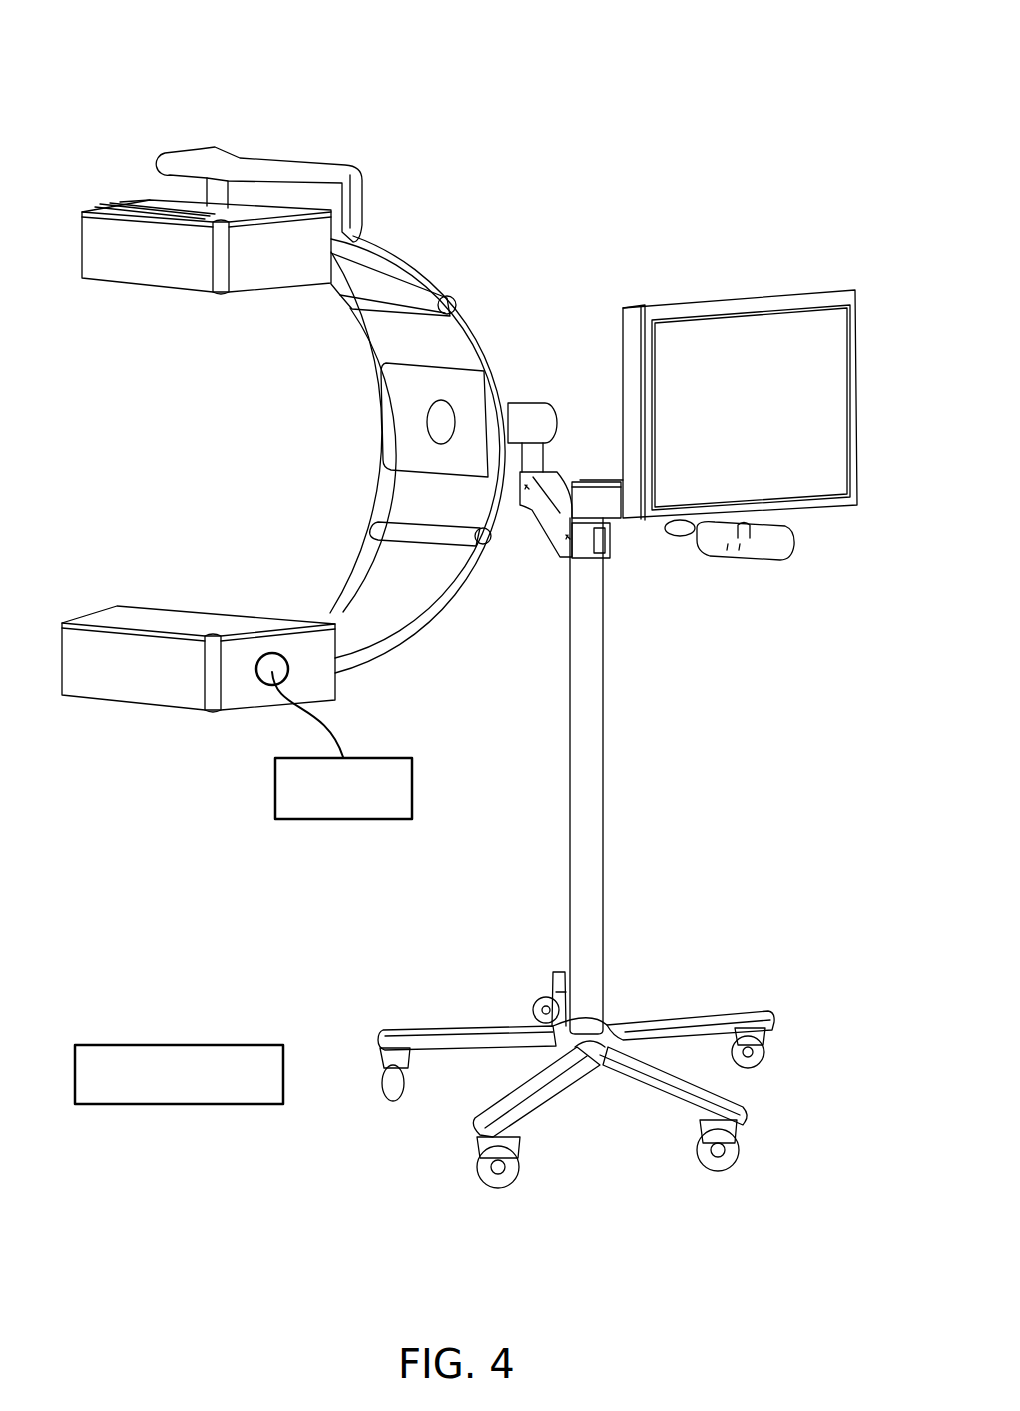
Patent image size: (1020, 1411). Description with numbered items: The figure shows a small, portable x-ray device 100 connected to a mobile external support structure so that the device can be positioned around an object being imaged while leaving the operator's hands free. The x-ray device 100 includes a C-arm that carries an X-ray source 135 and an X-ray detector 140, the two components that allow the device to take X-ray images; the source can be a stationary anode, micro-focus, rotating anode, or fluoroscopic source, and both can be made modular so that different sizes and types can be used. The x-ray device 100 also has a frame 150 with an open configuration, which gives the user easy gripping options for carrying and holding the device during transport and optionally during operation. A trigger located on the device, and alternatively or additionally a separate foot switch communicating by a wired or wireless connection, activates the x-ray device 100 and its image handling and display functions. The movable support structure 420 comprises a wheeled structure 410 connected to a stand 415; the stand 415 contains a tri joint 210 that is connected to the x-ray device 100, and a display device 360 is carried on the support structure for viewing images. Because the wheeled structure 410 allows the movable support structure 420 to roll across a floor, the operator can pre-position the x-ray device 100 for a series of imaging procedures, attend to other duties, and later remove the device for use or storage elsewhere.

The x-ray device 100 is at (448, 67).
The X-ray source 135 is at (182, 268).
The X-ray detector 140 is at (170, 684).
The frame 150 is at (462, 272).
The tri joint 210 is at (536, 395).
The display device 360 is at (777, 418).
The wheeled structure 410 is at (749, 994).
The stand 415 is at (597, 817).
The movable support structure 420 is at (744, 677).